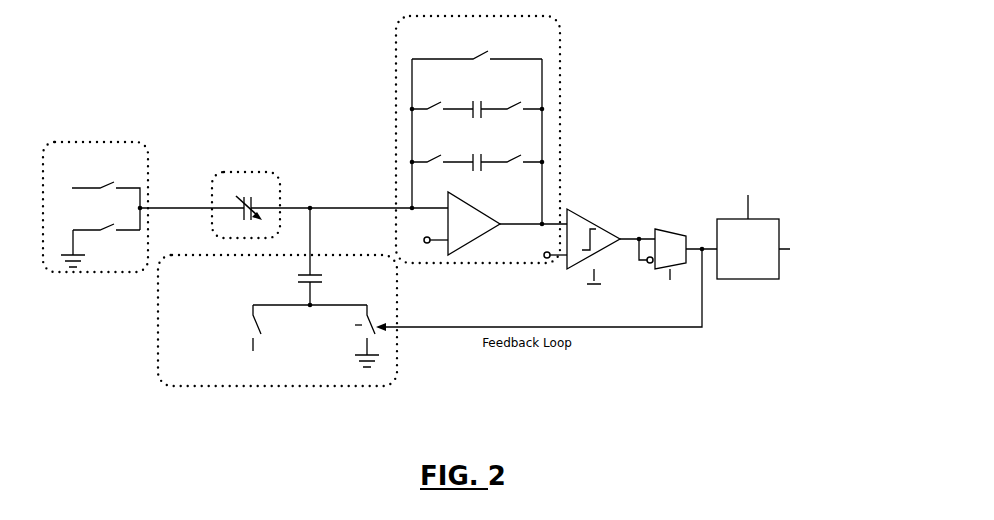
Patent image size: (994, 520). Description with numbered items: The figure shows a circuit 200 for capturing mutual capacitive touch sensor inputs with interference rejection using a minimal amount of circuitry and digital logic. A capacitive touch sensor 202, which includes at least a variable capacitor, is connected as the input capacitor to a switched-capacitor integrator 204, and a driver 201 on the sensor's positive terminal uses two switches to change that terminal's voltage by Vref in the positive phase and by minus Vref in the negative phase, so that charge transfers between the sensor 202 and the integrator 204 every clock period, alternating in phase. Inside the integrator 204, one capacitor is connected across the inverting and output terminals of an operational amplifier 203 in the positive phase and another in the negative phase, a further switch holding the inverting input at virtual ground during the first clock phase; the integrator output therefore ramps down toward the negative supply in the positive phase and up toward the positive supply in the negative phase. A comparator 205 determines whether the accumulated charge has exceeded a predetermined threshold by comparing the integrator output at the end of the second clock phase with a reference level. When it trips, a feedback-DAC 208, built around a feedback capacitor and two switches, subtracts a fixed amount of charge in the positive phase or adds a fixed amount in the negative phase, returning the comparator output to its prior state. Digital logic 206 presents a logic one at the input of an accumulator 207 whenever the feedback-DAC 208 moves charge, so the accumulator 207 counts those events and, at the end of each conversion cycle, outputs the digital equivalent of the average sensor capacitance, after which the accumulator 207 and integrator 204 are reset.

The circuit 200 is at (708, 105).
The driver 201 is at (108, 140).
The capacitive touch sensor 202 is at (255, 172).
The operational amplifier 203 is at (462, 233).
The switched-capacitor integrator 204 is at (516, 139).
The comparator 205 is at (590, 218).
The digital logic 206 is at (676, 232).
The accumulator 207 is at (736, 274).
The feedback-DAC 208 is at (397, 372).